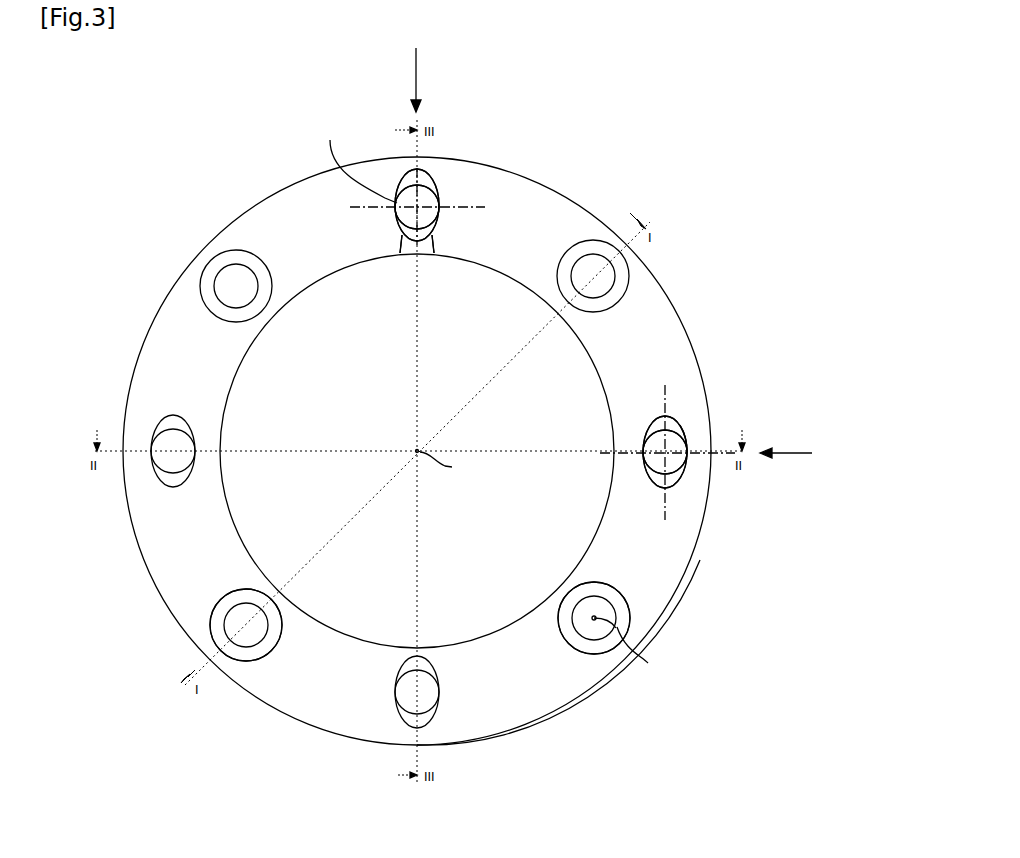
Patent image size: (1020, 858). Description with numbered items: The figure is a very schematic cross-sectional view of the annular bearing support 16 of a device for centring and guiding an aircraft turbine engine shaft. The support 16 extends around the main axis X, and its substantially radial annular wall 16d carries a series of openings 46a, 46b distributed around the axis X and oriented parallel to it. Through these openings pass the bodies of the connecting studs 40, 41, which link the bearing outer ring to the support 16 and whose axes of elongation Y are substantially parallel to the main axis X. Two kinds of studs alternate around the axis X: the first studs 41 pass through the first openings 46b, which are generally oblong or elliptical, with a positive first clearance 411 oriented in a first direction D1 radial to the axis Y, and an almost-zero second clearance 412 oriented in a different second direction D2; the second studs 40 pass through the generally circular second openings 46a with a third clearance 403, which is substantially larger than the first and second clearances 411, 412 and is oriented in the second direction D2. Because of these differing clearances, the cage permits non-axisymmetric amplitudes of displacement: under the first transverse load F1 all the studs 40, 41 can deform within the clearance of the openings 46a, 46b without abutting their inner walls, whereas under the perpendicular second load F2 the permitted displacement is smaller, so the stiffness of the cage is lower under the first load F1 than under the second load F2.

The annular bearing support 16 is at (124, 243).
The substantially radial annular wall 16d is at (494, 713).
The second stud 40 is at (246, 636).
The third clearance 403 is at (270, 624).
The first stud 41 is at (430, 237).
The first clearance 411 is at (410, 233).
The second clearance 412 is at (439, 205).
The second opening 46a is at (218, 600).
The first opening 46b is at (430, 177).
The main axis X is at (444, 467).
The axis of elongation Y is at (492, 395).
The first direction D1 is at (420, 268).
The second direction D2 is at (480, 210).
The first transverse load F1 is at (418, 83).
The second load F2 is at (788, 448).